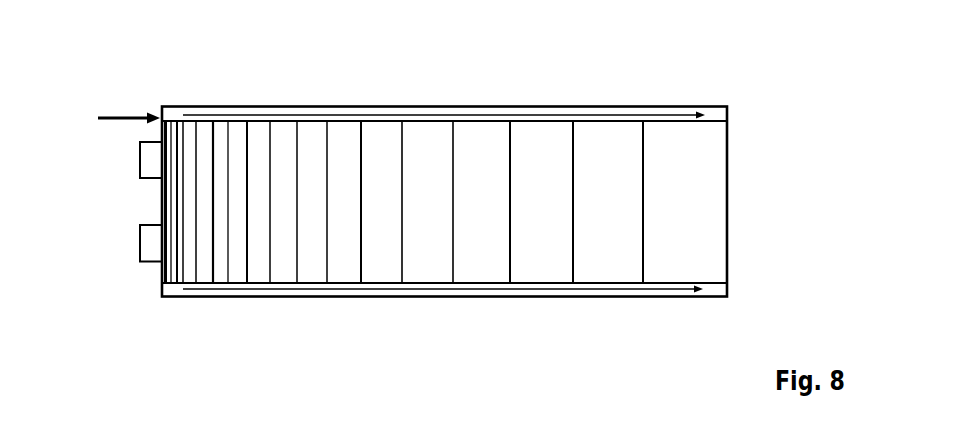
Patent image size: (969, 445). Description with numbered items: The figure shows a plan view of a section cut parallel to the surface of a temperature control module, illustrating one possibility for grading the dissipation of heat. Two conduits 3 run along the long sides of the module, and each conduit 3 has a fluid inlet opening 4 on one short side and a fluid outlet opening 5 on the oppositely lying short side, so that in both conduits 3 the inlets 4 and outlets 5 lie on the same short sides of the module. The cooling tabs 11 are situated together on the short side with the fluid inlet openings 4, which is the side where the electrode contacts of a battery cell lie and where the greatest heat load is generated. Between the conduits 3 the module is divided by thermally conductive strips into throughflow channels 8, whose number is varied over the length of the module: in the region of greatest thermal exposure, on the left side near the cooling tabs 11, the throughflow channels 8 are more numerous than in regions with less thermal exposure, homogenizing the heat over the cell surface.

The conduit 3 is at (212, 108).
The fluid inlet opening 4 is at (162, 295).
The fluid outlet opening 5 is at (715, 117).
The throughflow channels 8 is at (439, 121).
The cooling tabs 11 is at (126, 177).